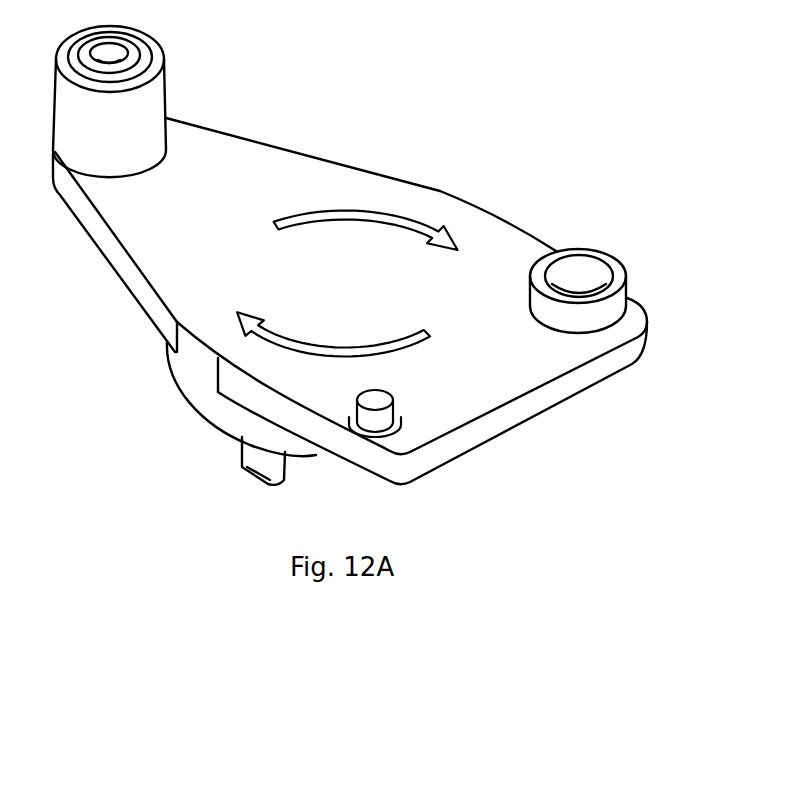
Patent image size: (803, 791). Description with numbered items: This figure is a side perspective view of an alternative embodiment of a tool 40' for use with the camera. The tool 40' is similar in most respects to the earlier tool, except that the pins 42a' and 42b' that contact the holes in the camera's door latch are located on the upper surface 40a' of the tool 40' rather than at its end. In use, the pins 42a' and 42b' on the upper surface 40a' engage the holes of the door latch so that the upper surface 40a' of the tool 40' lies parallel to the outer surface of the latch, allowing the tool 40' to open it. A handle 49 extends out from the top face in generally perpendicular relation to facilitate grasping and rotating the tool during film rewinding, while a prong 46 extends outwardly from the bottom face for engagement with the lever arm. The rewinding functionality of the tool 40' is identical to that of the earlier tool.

The tool 40' is at (328, 251).
The upper surface 40a' is at (323, 242).
The pin 42a' is at (593, 260).
The pin 42b' is at (446, 446).
The prong 46 is at (238, 453).
The handle 49 is at (165, 72).